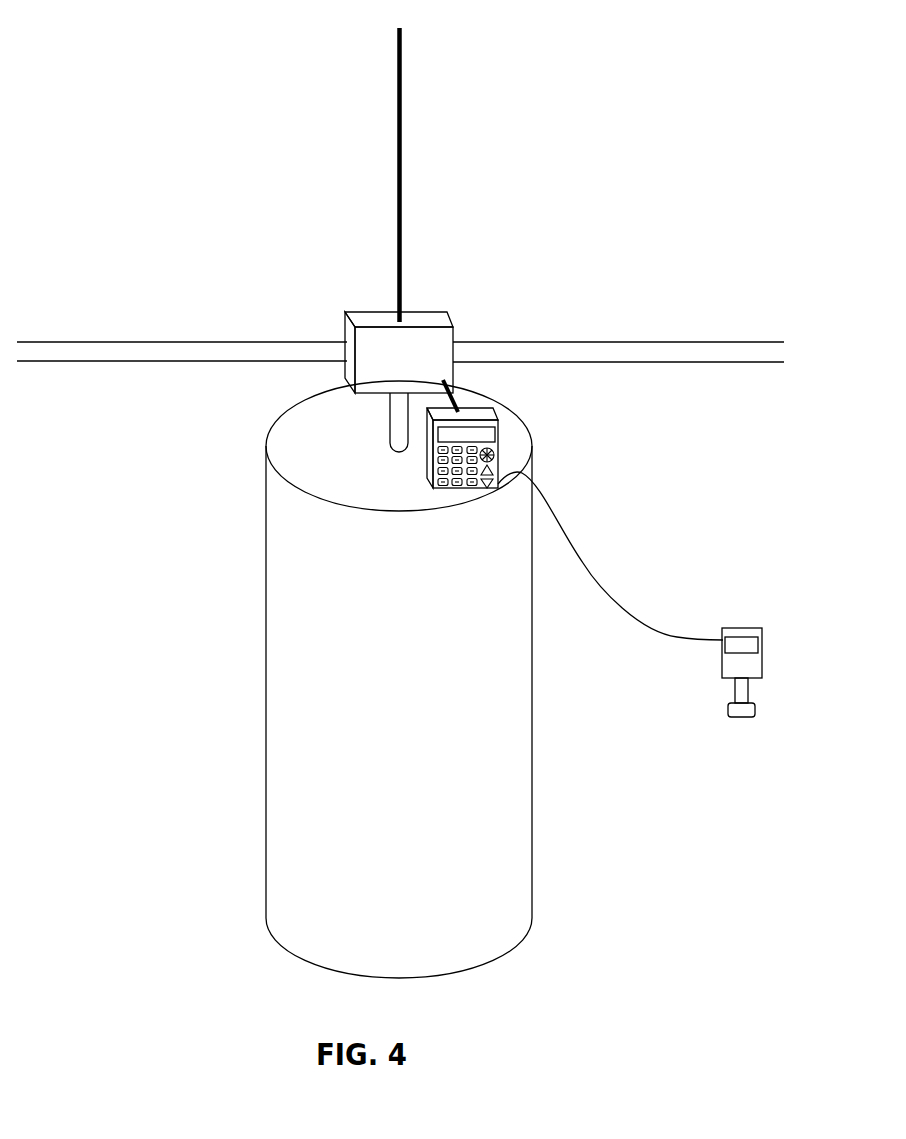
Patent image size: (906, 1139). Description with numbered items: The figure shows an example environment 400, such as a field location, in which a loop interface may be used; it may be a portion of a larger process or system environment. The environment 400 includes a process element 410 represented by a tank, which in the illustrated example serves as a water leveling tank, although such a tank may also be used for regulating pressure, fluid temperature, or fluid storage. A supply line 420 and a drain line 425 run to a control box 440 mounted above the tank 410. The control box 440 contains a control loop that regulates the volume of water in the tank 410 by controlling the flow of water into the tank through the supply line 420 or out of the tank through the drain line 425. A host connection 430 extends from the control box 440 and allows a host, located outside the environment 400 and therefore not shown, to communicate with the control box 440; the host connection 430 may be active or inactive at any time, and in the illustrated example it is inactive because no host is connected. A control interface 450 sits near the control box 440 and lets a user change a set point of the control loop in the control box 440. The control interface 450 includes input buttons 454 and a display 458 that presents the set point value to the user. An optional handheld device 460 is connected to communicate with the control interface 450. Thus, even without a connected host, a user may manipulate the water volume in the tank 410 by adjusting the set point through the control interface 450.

The environment 400 is at (98, 60).
The process element 410 is at (359, 679).
The supply line 420 is at (182, 361).
The drain line 425 is at (618, 359).
The host connection 430 is at (491, 175).
The control box 440 is at (433, 338).
The control interface 450 is at (575, 510).
The input buttons 454 is at (423, 442).
The display 458 is at (517, 407).
The handheld device 460 is at (770, 657).